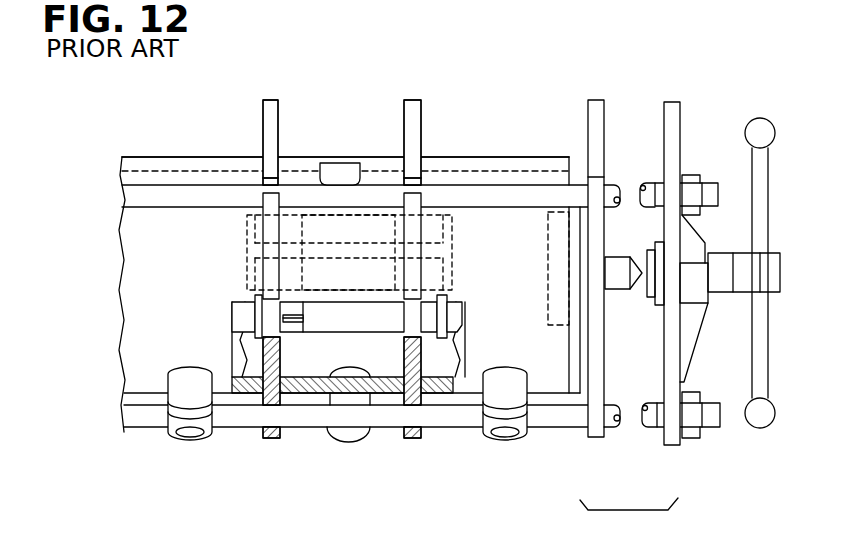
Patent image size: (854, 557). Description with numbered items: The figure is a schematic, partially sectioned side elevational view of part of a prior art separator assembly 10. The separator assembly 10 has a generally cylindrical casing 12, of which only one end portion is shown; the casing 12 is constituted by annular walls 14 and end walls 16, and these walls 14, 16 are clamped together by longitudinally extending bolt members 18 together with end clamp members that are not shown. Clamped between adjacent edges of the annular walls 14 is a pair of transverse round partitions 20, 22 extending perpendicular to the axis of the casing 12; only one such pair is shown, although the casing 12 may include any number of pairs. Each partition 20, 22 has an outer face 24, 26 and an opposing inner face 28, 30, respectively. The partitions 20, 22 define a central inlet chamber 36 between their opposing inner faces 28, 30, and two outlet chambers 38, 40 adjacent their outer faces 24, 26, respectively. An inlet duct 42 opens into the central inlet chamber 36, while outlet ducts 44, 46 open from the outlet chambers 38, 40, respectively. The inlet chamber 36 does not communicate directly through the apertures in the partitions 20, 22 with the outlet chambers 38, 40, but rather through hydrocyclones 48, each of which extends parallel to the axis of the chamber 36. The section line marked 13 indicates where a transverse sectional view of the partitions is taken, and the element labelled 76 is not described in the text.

The separator assembly 10 is at (131, 149).
The casing 12 is at (163, 155).
The section line 13- 13 is at (420, 34).
The annular walls 14 is at (219, 155).
The end walls 16 is at (594, 100).
The bolt members 18 is at (613, 183).
The transverse round partition 20 is at (268, 100).
The transverse round partition 22 is at (413, 100).
The outer face 24 is at (262, 113).
The outer face 26 is at (425, 130).
The inner face 28 is at (280, 115).
The inner face 30 is at (404, 118).
The central inlet chamber 36 is at (370, 144).
The outlet chamber 38 is at (240, 347).
The outlet chamber 40 is at (435, 367).
The inlet duct 42 is at (348, 440).
The outlet duct 44 is at (188, 440).
The outlet duct 46 is at (518, 440).
The hydrocyclone 48 is at (368, 228).
The retaining clip 76 is at (298, 323).